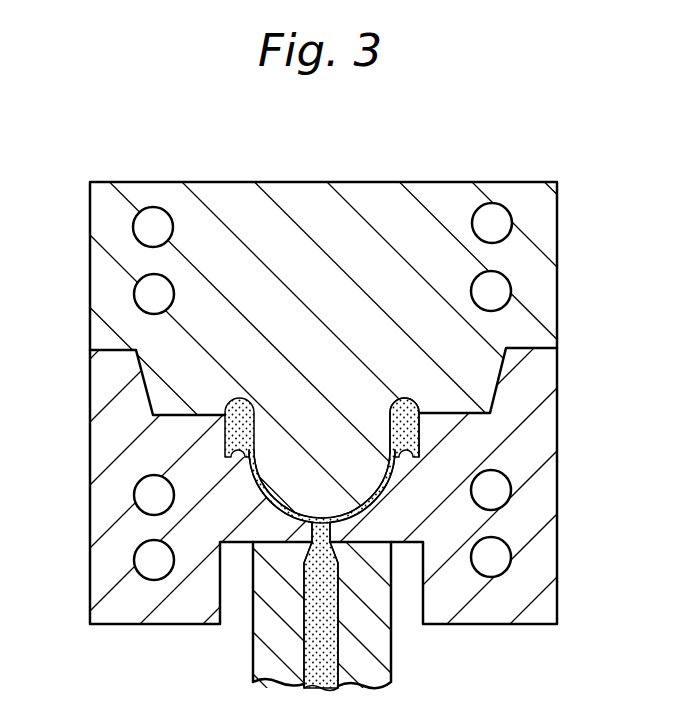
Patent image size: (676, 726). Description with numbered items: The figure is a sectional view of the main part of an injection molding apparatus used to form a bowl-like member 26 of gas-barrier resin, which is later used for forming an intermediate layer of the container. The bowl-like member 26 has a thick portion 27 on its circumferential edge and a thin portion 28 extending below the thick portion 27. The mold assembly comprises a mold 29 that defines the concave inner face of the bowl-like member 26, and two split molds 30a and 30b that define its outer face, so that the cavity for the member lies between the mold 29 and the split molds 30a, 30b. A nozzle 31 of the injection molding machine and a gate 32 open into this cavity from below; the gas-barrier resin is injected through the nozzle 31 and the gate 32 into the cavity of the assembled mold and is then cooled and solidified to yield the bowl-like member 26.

The mold 29 is at (387, 205).
The split mold 30a is at (523, 585).
The split mold 30b is at (103, 593).
The nozzle 31 is at (372, 657).
The gate 32 is at (312, 530).
The bowl-like member 26 is at (396, 465).
The thick portion 27 is at (407, 422).
The thin portion 28 is at (374, 497).